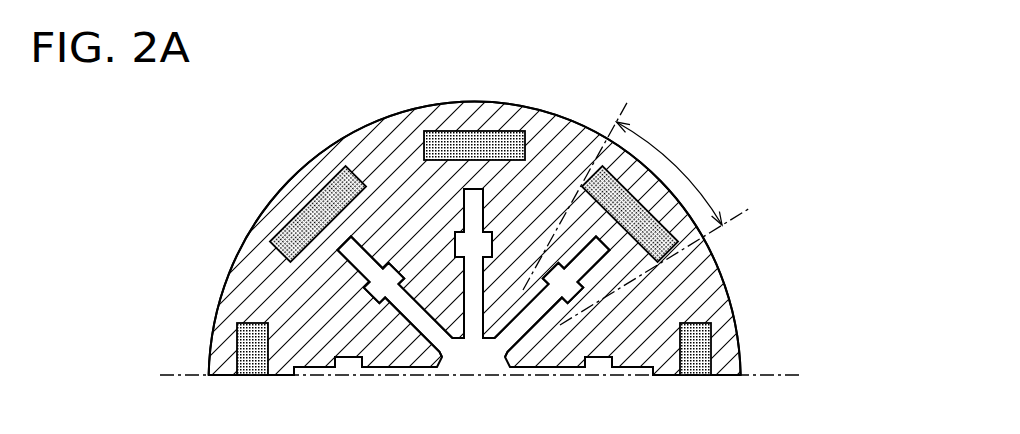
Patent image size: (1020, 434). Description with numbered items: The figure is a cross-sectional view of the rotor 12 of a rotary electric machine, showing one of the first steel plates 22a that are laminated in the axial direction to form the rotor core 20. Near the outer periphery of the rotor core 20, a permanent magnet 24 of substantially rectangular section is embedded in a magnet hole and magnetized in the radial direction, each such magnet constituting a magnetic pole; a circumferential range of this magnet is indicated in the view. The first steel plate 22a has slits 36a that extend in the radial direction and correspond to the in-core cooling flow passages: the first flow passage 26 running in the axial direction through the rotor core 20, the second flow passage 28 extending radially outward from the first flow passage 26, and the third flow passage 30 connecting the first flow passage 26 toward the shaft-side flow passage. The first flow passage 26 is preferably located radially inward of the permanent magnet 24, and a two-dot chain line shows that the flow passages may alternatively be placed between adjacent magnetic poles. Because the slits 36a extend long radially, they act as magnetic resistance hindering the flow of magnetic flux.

The rotor 12 is at (515, 217).
The rotor core 20 is at (515, 217).
The first steel plate 22a is at (717, 270).
The permanent magnet 24 is at (470, 131).
The first flow passage 26 is at (392, 267).
The second flow passage 28 is at (352, 252).
The third flow passage 30 is at (516, 333).
The slits 36a is at (465, 294).